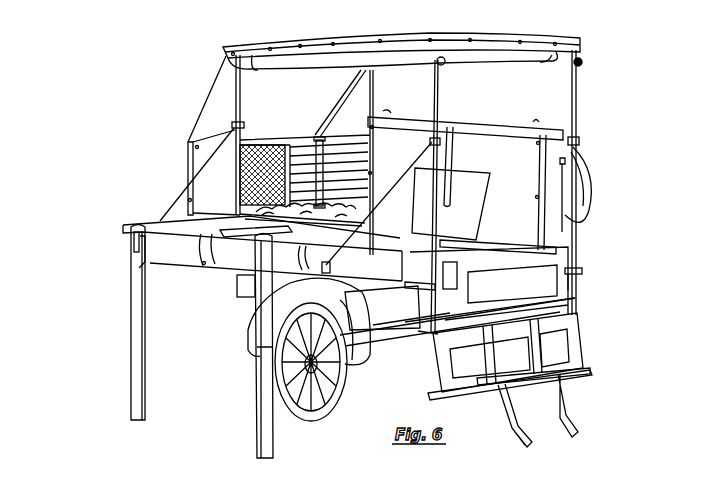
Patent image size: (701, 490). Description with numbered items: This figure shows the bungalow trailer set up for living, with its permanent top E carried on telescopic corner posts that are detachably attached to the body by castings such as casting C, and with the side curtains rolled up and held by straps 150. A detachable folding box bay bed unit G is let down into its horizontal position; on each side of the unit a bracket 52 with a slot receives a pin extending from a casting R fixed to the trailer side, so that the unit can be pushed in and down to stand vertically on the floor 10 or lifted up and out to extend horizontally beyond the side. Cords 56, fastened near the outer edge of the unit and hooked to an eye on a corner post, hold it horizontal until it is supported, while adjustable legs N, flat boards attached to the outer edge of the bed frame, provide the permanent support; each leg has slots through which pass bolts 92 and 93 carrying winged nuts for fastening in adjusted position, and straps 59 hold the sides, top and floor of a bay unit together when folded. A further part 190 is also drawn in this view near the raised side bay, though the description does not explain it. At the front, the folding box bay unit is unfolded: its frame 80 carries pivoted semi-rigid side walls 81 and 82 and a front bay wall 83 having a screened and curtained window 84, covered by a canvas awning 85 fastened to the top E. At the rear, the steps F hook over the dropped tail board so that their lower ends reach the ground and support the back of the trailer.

The top E is at (480, 40).
The straps 150 is at (553, 60).
The adjustable legs N is at (484, 128).
The latch rod 190 is at (456, 148).
The detachable folding box bay bed unit G is at (359, 193).
The cords 56 is at (174, 197).
The straps 59 is at (556, 251).
The casting C is at (578, 269).
The canvas awning 85 is at (306, 162).
The screened and curtained window 84 is at (263, 150).
The front bay wall 83 is at (329, 175).
The side wall 82 is at (332, 172).
The side wall 81 is at (214, 172).
The frame 80 is at (258, 211).
The bolt 92 is at (131, 255).
The bolt 93 is at (137, 262).
The bracket 52 is at (398, 281).
The casting R is at (414, 285).
The floor 10 is at (490, 313).
The steps F is at (530, 378).